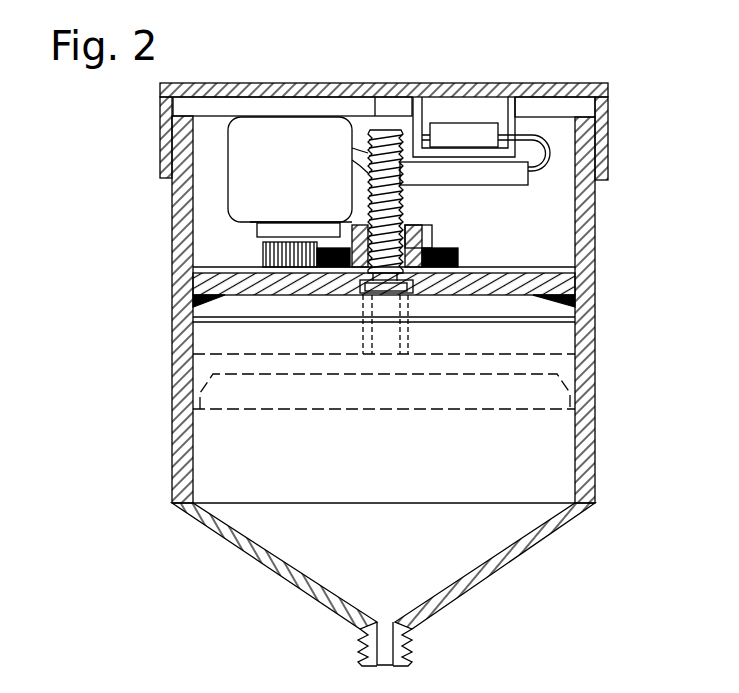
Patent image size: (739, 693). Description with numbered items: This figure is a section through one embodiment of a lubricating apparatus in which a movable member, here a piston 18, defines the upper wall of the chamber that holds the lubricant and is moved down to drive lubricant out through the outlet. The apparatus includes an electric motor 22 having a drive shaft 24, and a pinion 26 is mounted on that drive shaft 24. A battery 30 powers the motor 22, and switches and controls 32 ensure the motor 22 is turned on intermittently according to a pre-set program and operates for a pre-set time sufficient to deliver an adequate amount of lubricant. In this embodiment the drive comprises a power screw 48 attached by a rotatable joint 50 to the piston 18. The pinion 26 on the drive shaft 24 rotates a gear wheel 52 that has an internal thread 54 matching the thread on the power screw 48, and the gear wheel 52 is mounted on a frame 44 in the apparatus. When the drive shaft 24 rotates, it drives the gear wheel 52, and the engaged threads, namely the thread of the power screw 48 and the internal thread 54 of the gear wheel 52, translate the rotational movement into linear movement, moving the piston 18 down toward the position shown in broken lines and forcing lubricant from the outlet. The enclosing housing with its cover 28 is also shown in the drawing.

The piston 18 is at (238, 305).
The motor 22 is at (283, 128).
The drive shaft 24 is at (260, 237).
The pinion 26 is at (263, 252).
The lid 28 is at (570, 83).
The battery 30 is at (470, 168).
The switches and controls 32 is at (450, 128).
The frame 44 is at (432, 235).
The power screw 48 is at (403, 188).
The rotatable joint 50 is at (383, 277).
The gear wheel 52 is at (458, 257).
The internal thread 54 is at (360, 270).